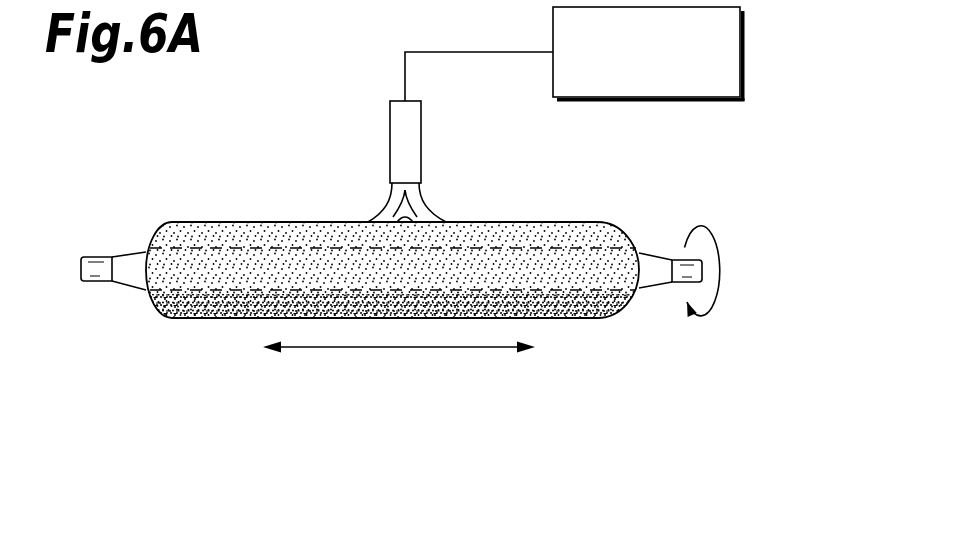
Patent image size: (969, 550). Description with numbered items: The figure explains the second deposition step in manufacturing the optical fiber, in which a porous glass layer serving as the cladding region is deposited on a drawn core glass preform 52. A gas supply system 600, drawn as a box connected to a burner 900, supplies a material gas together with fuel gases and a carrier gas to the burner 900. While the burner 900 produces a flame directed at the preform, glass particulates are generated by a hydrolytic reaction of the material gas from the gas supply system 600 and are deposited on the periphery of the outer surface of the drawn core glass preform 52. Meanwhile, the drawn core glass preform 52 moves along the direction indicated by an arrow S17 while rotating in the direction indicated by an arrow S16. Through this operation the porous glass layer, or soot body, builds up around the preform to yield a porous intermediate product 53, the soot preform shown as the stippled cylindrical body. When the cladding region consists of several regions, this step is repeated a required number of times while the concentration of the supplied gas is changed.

The gas supply system 600 is at (740, 60).
The burner 900 is at (413, 153).
The porous intermediate product 53 is at (563, 218).
The drawn core glass preform 52 is at (597, 318).
The arrow S16 is at (722, 270).
The arrow S17 is at (408, 347).